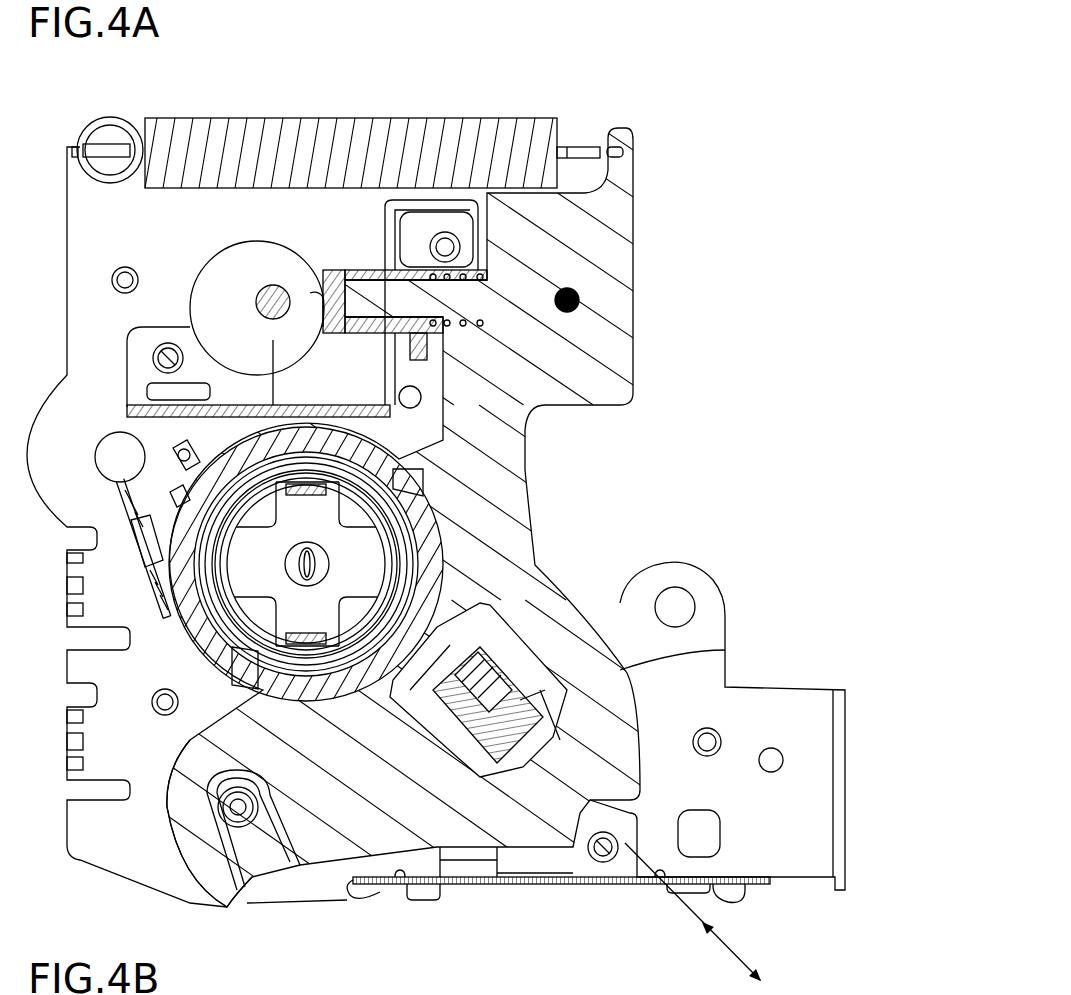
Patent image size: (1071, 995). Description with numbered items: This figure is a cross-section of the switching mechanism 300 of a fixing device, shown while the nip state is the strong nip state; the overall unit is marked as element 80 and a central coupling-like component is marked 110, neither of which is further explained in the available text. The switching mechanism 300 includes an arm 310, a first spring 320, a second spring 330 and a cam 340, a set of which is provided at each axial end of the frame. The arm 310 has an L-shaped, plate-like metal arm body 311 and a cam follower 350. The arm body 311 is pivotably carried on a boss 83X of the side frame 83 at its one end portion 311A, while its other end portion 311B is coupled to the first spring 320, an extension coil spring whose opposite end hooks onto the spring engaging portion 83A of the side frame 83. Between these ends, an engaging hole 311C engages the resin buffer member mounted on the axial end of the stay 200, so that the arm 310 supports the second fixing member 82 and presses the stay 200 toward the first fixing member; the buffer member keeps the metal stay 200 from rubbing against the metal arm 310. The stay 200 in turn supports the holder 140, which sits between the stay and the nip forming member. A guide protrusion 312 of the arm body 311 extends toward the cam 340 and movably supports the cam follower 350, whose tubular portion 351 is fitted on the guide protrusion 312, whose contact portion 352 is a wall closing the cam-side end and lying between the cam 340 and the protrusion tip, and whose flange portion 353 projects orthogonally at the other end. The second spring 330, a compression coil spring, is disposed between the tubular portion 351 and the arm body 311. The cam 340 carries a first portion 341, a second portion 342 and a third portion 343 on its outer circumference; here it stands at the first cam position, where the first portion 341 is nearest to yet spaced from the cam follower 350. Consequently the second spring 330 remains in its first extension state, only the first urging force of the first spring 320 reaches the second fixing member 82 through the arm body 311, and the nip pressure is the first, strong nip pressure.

The image forming apparatus unit 80 is at (790, 100).
The side frame 83 is at (90, 835).
The spring engaging portion 83A is at (108, 140).
The boss 83X is at (267, 843).
The switching mechanism 300 is at (680, 135).
The arm 310 is at (600, 633).
The arm body 311 is at (725, 650).
The one end portion 311A is at (197, 852).
The other end portion 311B is at (622, 128).
The engaging hole 311C is at (527, 700).
The guide protrusion 312 is at (363, 307).
The first spring 320 is at (322, 117).
The second spring 330 is at (470, 333).
The cam 340 is at (207, 263).
The first portion 341 is at (320, 253).
The second portion 342 is at (270, 240).
The third portion 343 is at (260, 400).
The cam follower 350 is at (340, 257).
The tubular portion 351 is at (363, 267).
The contact portion 352 is at (320, 317).
The flange portion 353 is at (447, 273).
The drive coupling 110 is at (329, 564).
The holder 140 is at (463, 668).
The stay 200 is at (507, 700).
The second fixing member 82 is at (515, 767).